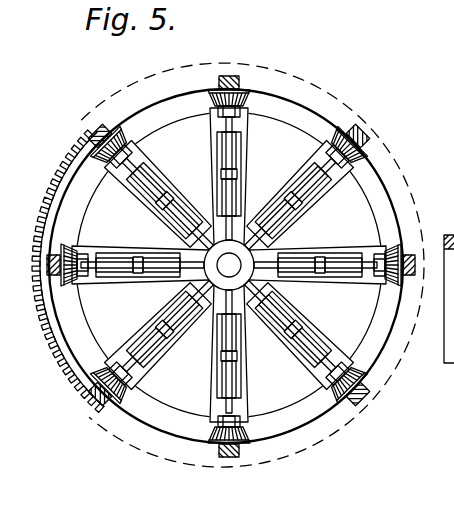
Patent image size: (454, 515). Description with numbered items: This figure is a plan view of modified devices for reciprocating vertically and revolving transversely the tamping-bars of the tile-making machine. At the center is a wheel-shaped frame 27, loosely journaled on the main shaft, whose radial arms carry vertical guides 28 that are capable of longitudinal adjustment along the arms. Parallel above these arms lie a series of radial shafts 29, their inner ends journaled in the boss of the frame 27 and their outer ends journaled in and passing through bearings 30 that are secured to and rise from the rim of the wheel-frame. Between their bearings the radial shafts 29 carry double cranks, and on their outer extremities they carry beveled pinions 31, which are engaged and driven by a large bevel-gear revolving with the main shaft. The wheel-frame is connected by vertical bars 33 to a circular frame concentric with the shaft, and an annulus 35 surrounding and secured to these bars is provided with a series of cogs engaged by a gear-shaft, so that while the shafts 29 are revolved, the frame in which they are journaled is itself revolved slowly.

The wheel-shaped frame 27 is at (173, 118).
The vertical guides 28 is at (213, 183).
The radial shafts 29 is at (299, 175).
The bearings 30 is at (241, 114).
The beveled pinions 31 is at (213, 97).
The vertical bars 33 is at (220, 84).
The annulus 35 is at (74, 386).